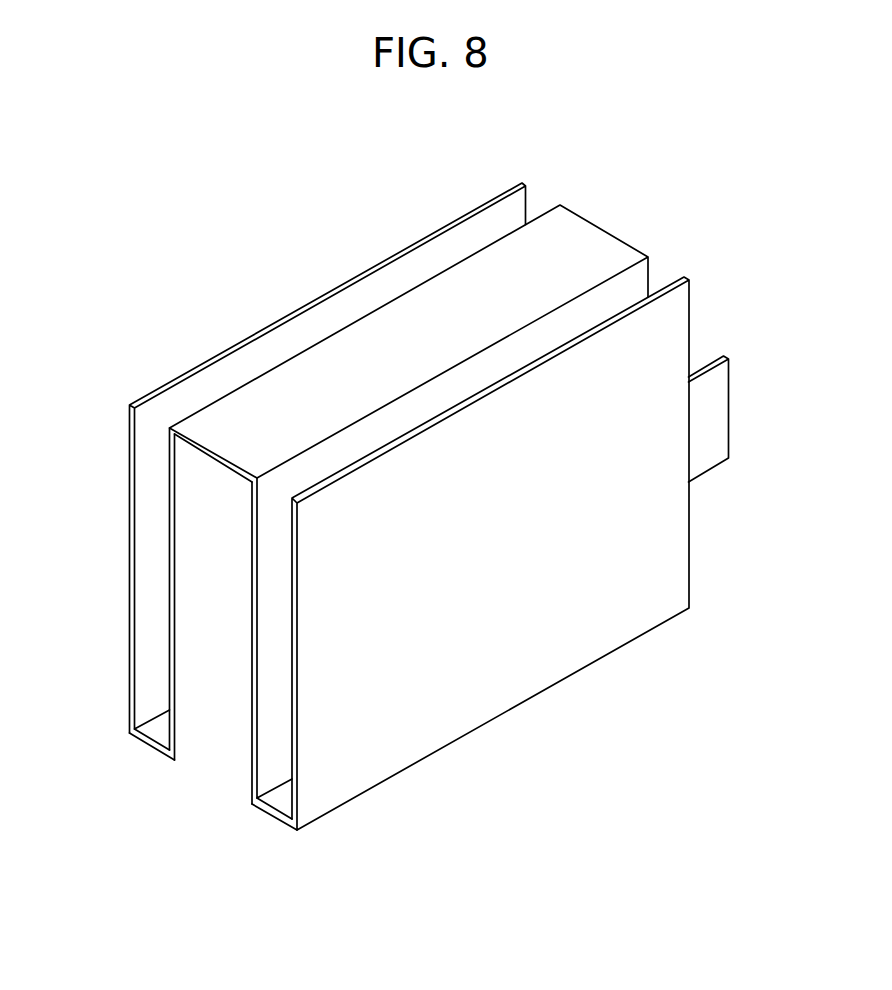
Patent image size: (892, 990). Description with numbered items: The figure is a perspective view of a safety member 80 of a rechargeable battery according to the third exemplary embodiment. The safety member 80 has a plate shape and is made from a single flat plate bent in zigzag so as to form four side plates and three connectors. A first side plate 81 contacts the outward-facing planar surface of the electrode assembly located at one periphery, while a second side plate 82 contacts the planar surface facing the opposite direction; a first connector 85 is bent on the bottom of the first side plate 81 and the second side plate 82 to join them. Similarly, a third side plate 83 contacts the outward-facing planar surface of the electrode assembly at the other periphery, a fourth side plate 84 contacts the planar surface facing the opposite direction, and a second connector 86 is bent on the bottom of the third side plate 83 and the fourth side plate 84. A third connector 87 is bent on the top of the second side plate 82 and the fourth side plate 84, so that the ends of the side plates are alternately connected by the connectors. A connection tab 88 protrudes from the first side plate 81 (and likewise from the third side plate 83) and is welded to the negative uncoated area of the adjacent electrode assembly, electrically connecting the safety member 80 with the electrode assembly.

The safety member 80 is at (305, 256).
The first side plate 81 is at (558, 662).
The second side plate 82 is at (250, 777).
The third side plate 83 is at (132, 573).
The fourth side plate 84 is at (188, 740).
The first connector 85 is at (272, 815).
The second connector 86 is at (141, 741).
The third connector 87 is at (597, 236).
The connection tab 88 is at (718, 412).